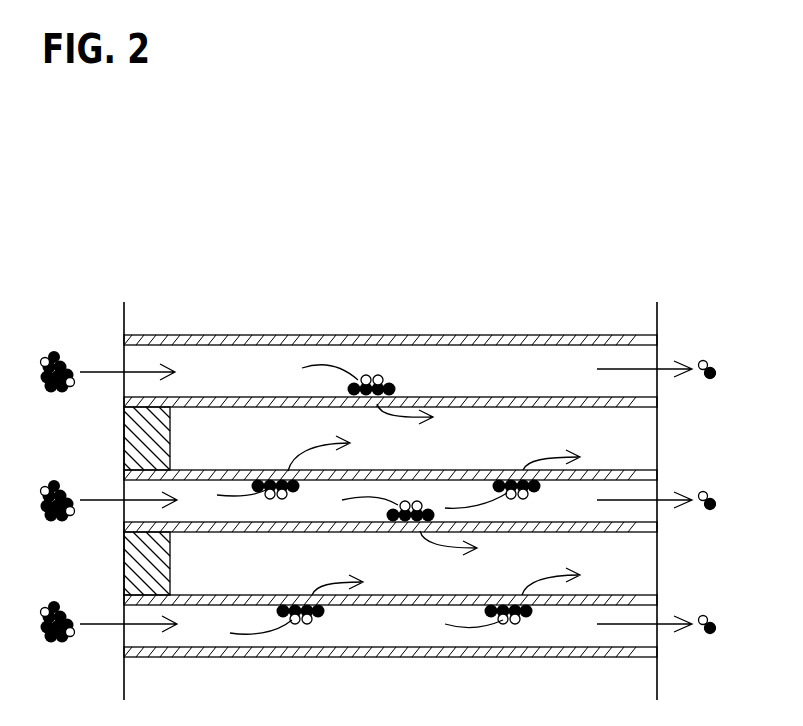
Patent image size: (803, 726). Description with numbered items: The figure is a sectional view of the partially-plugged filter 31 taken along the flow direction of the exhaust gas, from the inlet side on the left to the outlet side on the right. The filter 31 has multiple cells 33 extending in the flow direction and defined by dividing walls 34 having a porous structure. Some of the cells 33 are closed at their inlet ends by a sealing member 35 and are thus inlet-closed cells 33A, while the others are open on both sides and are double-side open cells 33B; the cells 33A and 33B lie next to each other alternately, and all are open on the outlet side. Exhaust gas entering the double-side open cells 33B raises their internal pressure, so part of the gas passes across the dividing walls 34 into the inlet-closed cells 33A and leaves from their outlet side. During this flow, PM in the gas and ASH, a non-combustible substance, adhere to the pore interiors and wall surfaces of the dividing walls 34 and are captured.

The partially-plugged filter 31 is at (453, 313).
The cells 33 is at (390, 425).
The inlet-closed cell 33A is at (257, 428).
The double-side open cell 33B is at (213, 368).
The dividing wall 34 is at (442, 396).
The sealing member 35 is at (125, 438).
The ash ASH is at (703, 361).
The element PM is at (711, 380).